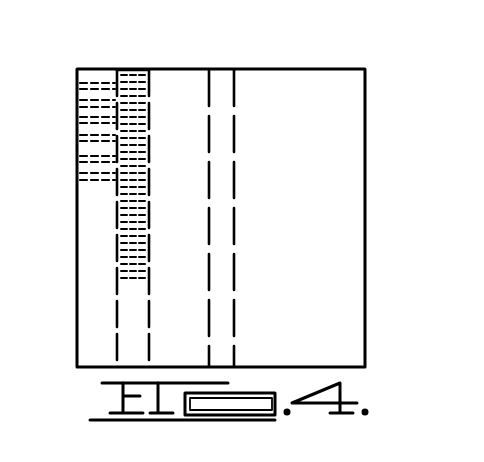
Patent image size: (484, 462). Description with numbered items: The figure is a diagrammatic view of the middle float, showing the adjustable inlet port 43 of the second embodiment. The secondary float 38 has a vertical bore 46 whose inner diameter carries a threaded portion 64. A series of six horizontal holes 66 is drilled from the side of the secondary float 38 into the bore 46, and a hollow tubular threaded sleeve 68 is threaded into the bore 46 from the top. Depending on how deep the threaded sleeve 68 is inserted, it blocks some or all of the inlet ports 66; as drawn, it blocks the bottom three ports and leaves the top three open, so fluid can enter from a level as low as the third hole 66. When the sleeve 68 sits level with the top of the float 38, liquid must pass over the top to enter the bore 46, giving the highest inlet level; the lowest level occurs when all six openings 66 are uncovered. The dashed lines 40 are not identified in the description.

The secondary float 38 is at (365, 100).
The slot 40 is at (236, 200).
The adjustable inlet port 43 is at (138, 64).
The vertical bore 46 is at (117, 280).
The threaded portion 64 is at (142, 100).
The horizontal holes 66 is at (77, 104).
The threaded sleeve 68 is at (150, 158).